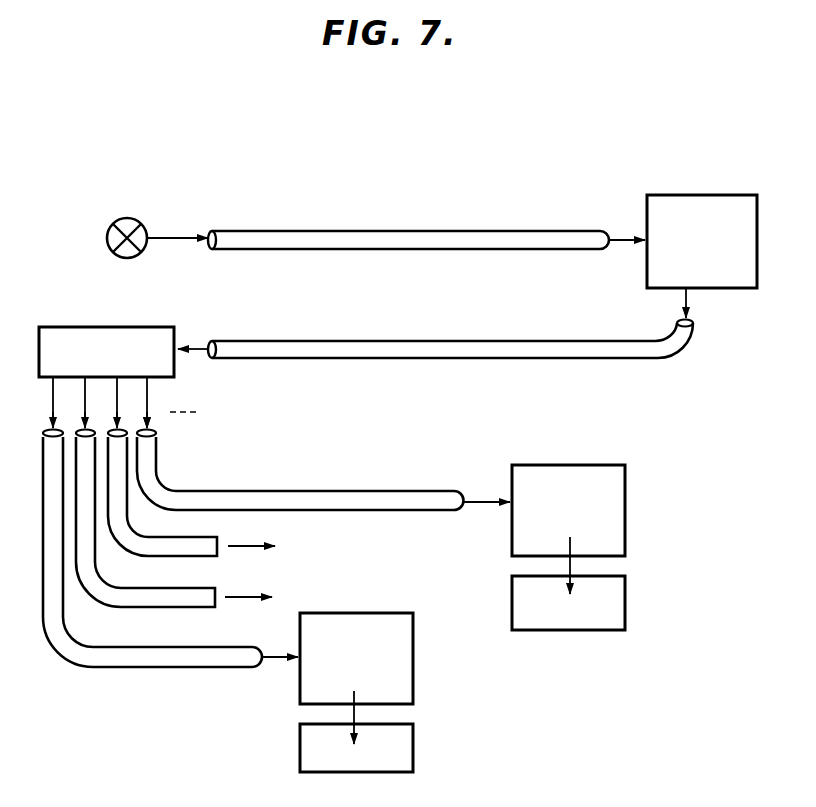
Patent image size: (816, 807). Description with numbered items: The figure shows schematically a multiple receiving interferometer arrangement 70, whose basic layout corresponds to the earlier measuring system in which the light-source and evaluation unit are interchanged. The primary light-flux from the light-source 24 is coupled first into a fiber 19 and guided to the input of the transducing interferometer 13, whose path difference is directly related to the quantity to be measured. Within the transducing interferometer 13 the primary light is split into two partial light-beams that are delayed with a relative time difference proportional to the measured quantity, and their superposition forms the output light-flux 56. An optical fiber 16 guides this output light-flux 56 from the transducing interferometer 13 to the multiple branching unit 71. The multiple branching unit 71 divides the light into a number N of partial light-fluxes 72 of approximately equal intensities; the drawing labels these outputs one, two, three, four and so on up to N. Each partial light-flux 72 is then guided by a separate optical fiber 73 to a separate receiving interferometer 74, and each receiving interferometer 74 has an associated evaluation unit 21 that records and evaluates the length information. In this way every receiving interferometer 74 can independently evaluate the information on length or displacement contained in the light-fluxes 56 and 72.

The multiple receiving interferometer arrangement 70 is at (392, 194).
The light-source 24 is at (138, 223).
The fiber 19 is at (463, 236).
The transducing interferometer 13 is at (657, 218).
The optical fiber 16 is at (402, 346).
The output light-flux 56 is at (195, 343).
The multiple branching unit 71 is at (131, 332).
The partial light-fluxes 72 is at (85, 393).
The light guide fibers 73 is at (158, 598).
The receiving interferometer 74 is at (512, 542).
The evaluation unit 21 is at (622, 613).